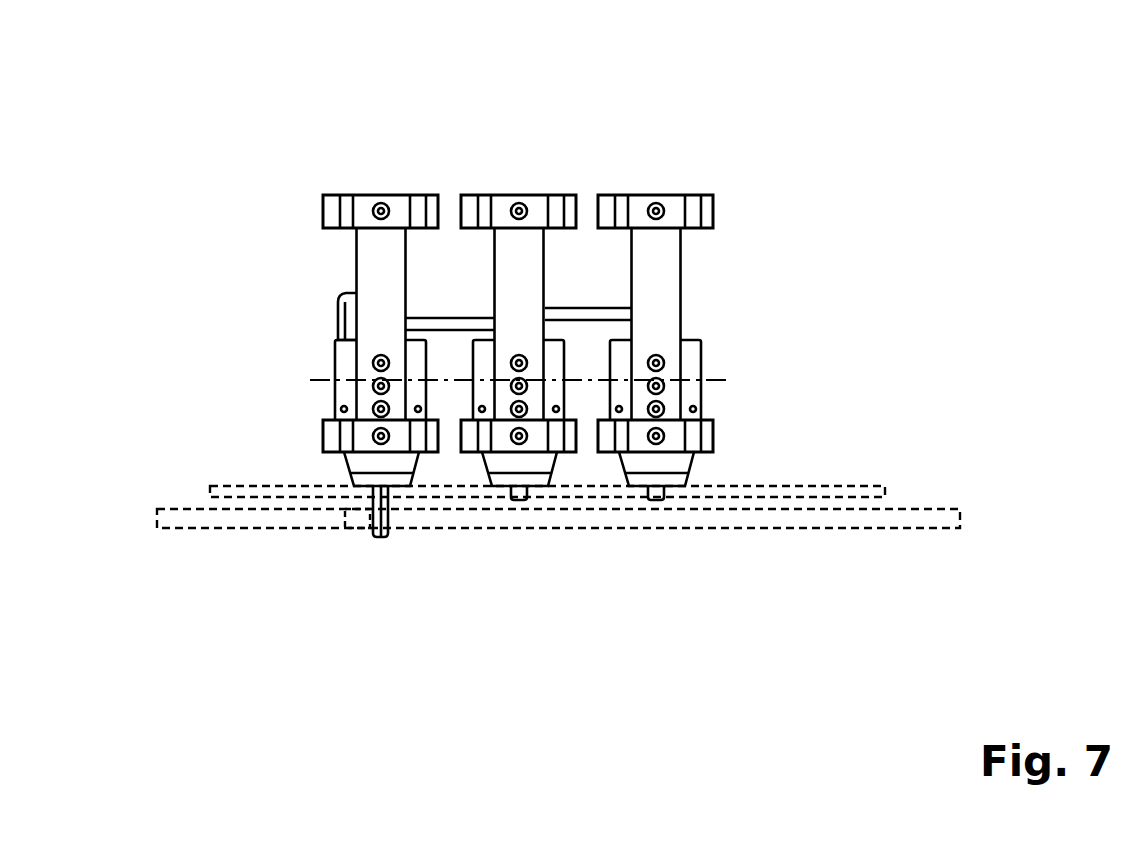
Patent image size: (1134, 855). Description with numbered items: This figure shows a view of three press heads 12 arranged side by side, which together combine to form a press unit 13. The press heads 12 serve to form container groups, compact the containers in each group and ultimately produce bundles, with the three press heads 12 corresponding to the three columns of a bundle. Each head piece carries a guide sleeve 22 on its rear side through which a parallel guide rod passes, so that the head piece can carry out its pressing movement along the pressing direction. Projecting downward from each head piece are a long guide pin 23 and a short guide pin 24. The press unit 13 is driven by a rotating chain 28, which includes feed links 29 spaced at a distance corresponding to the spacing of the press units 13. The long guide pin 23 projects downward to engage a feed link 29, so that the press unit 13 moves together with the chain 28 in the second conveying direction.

The press head 12 is at (347, 353).
The press unit 13 is at (538, 373).
The guide sleeve 22 is at (826, 484).
The long guide pin 23 is at (380, 535).
The short guide pin 24 is at (520, 500).
The rotating chain 28 is at (242, 531).
The feed link 29 is at (352, 531).